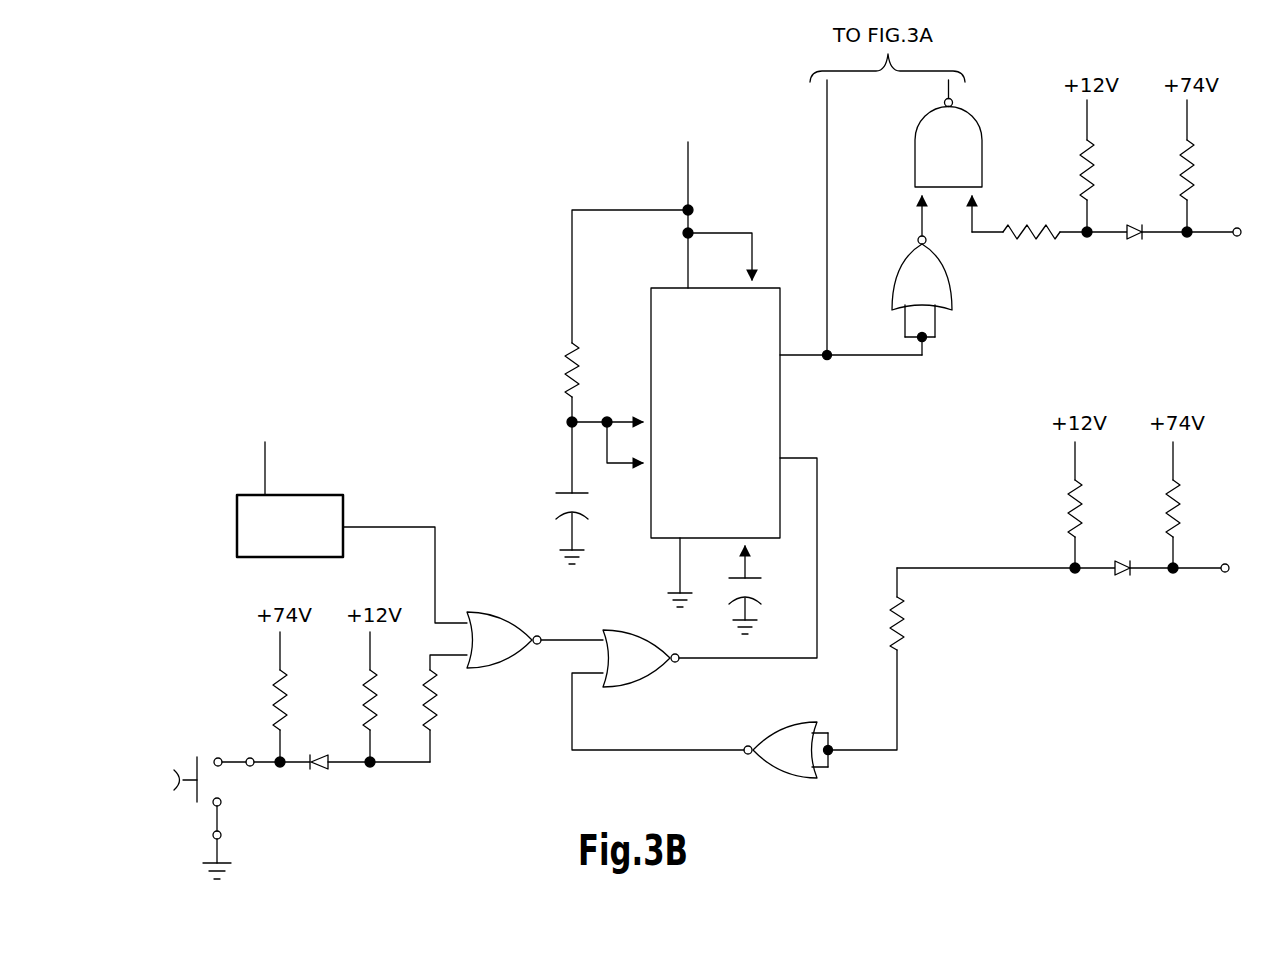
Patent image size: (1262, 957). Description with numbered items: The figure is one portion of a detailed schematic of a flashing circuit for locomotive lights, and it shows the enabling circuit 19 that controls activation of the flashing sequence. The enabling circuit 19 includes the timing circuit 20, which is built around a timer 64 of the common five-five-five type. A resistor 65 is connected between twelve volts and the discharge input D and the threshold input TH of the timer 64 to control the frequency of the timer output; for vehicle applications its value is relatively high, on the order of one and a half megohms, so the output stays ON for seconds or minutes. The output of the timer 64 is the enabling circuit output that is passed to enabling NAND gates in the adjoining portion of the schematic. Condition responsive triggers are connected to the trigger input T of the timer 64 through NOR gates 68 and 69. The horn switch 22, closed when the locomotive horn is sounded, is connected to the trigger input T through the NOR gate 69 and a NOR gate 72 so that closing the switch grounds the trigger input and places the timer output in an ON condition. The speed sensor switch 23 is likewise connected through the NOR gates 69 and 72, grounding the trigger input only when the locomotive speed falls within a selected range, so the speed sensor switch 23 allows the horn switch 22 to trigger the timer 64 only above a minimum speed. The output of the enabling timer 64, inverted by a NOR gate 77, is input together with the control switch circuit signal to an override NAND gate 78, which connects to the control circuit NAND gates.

The enabling circuit 19 is at (610, 172).
The timing circuit 20 is at (512, 481).
The horn switch 22 is at (198, 727).
The speed sensor switch 23 is at (325, 495).
The timer 64 is at (730, 415).
The resistor 65 is at (562, 382).
The NOR gate 68 is at (788, 750).
The NOR gate 69 is at (641, 658).
The NOR gate 72 is at (504, 640).
The NOR gate 77 is at (922, 275).
The override NAND gate 78 is at (959, 156).